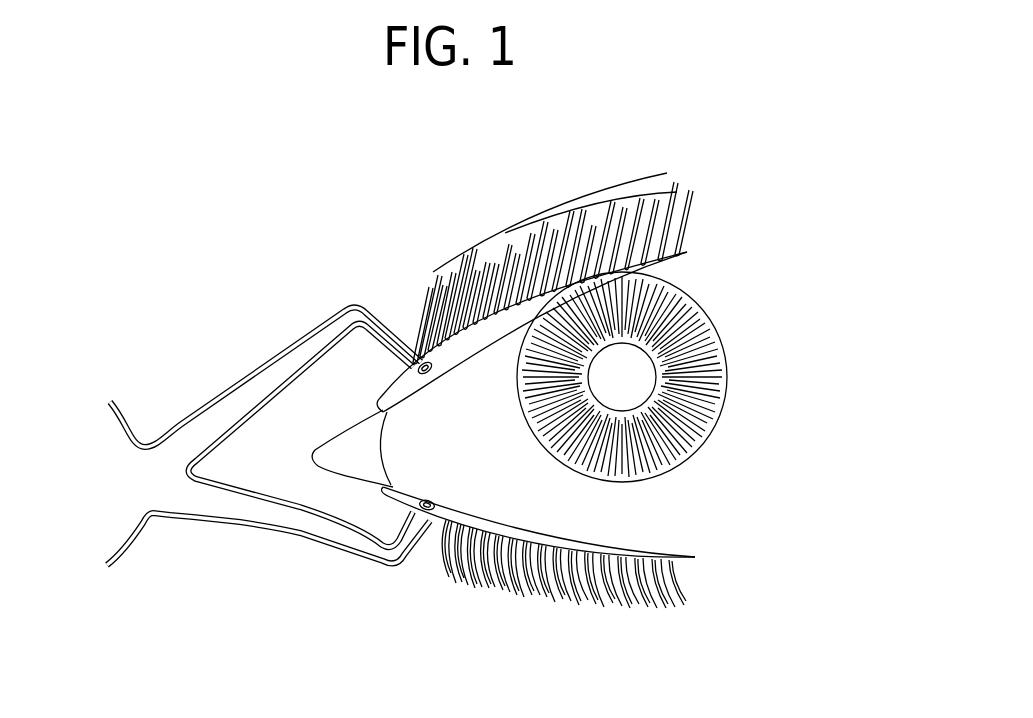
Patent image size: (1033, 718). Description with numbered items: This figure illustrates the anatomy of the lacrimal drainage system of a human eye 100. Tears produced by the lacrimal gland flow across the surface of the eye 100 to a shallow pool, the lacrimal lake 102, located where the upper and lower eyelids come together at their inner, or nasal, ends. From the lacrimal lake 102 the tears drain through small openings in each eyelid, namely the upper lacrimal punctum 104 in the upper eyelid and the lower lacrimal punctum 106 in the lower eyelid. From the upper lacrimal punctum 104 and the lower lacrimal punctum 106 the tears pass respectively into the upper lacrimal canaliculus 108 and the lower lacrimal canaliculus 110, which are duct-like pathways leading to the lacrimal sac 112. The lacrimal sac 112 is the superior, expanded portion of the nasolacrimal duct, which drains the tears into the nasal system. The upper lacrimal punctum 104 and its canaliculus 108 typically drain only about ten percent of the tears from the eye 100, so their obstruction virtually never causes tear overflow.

The human eye 100 is at (722, 508).
The lacrimal lake 102 is at (380, 450).
The upper lacrimal punctum 104 is at (431, 371).
The lower lacrimal punctum 106 is at (428, 502).
The upper lacrimal canaliculus 108 is at (348, 321).
The lower lacrimal canaliculus 110 is at (392, 553).
The lacrimal sac 112 is at (125, 537).